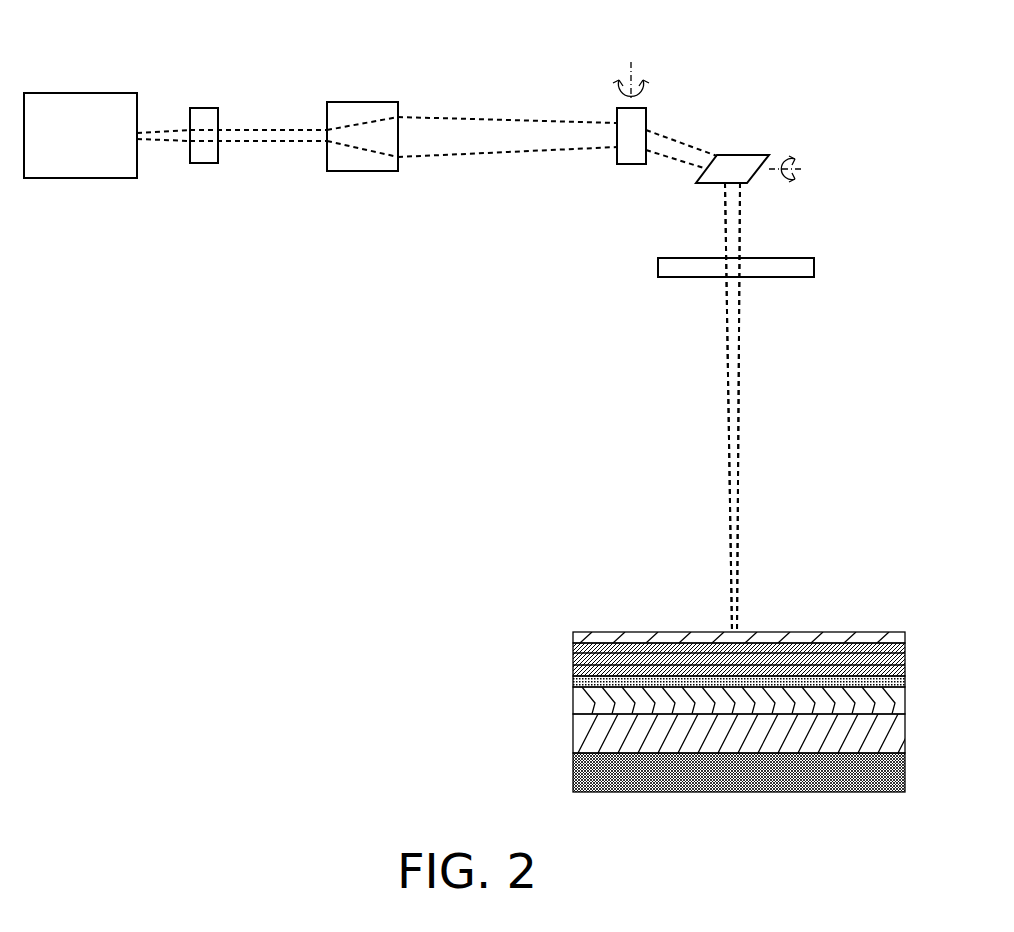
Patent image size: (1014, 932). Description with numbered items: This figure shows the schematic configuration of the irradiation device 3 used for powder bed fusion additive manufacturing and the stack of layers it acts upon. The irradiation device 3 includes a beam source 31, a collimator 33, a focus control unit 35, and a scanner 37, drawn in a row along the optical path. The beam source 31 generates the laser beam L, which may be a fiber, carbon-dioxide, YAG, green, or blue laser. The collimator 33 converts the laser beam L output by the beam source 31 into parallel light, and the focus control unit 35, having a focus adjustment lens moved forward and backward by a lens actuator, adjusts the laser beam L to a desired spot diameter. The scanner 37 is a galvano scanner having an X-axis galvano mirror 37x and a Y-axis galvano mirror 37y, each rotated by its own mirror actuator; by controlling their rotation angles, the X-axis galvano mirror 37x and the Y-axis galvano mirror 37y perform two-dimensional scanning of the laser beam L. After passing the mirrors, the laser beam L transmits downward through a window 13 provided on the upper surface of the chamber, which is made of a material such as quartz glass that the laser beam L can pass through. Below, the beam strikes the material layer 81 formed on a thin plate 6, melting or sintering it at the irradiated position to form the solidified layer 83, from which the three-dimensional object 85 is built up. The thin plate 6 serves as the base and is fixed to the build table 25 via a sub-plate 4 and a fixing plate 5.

The irradiation device 3 is at (348, 323).
The beam source 31 is at (53, 170).
The collimator 33 is at (210, 160).
The focus control unit 35 is at (338, 165).
The scanner 37 is at (720, 85).
The X-axis galvano mirror 37x is at (628, 158).
The Y-axis galvano mirror 37y is at (753, 162).
The window 13 is at (673, 268).
The laser beam L is at (738, 428).
The material layer 81 is at (650, 640).
The solidified layer 83 is at (563, 642).
The three-dimensional object 85 is at (686, 672).
The thin plate 6 is at (575, 682).
The fixing plate 5 is at (893, 697).
The sub-plate 4 is at (893, 733).
The build table 25 is at (578, 778).